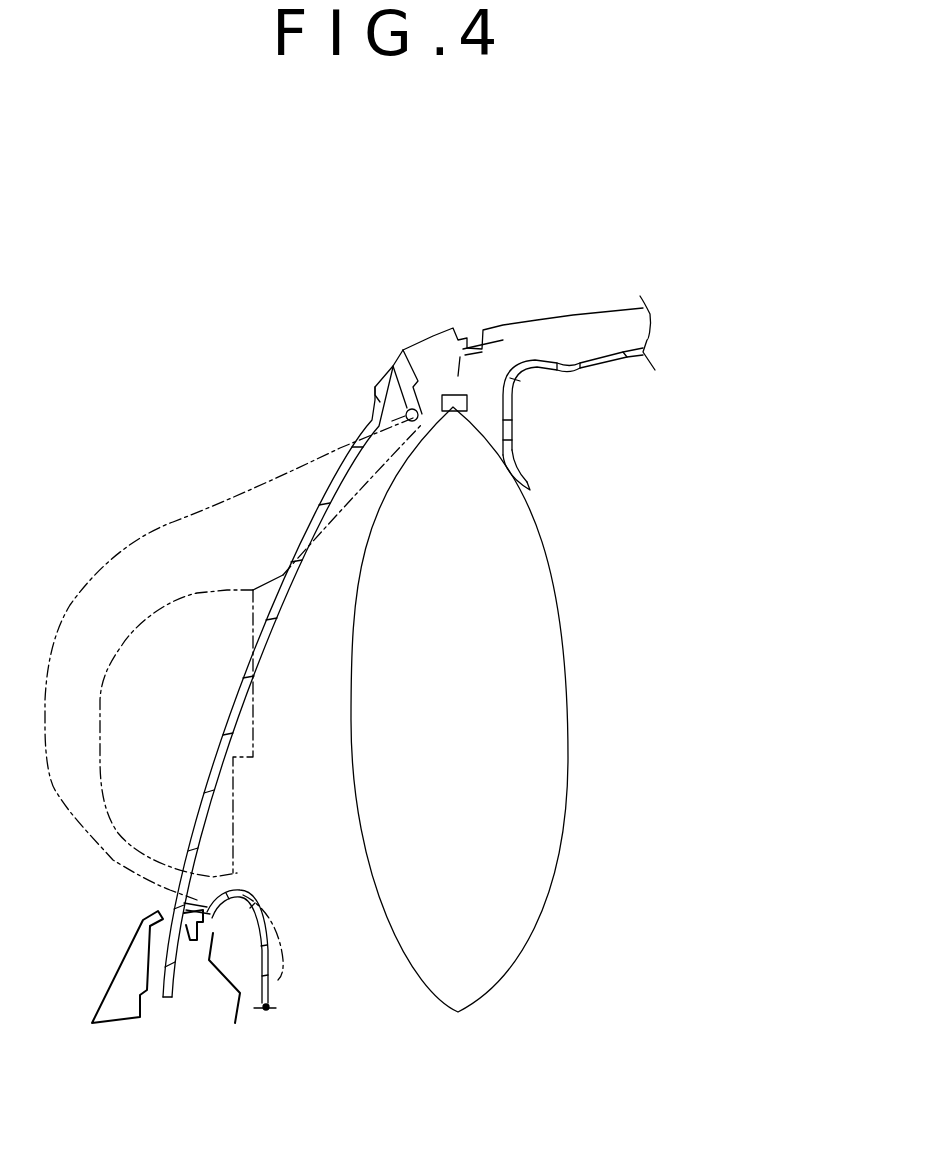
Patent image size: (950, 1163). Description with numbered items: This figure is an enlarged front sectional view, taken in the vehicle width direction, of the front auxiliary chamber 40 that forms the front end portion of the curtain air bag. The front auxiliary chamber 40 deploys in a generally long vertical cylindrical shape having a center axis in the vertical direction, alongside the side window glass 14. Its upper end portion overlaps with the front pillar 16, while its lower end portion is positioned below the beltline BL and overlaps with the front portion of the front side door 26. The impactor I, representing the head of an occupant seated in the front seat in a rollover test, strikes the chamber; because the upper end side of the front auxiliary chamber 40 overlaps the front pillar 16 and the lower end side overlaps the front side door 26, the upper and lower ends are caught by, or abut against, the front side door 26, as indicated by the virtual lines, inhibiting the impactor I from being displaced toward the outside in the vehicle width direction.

The front pillar 16 is at (430, 337).
The side window glass 14 is at (263, 630).
The front auxiliary chamber 40 is at (205, 510).
The impactor I is at (215, 833).
The beltline BL is at (280, 923).
The front side door 26 is at (282, 983).